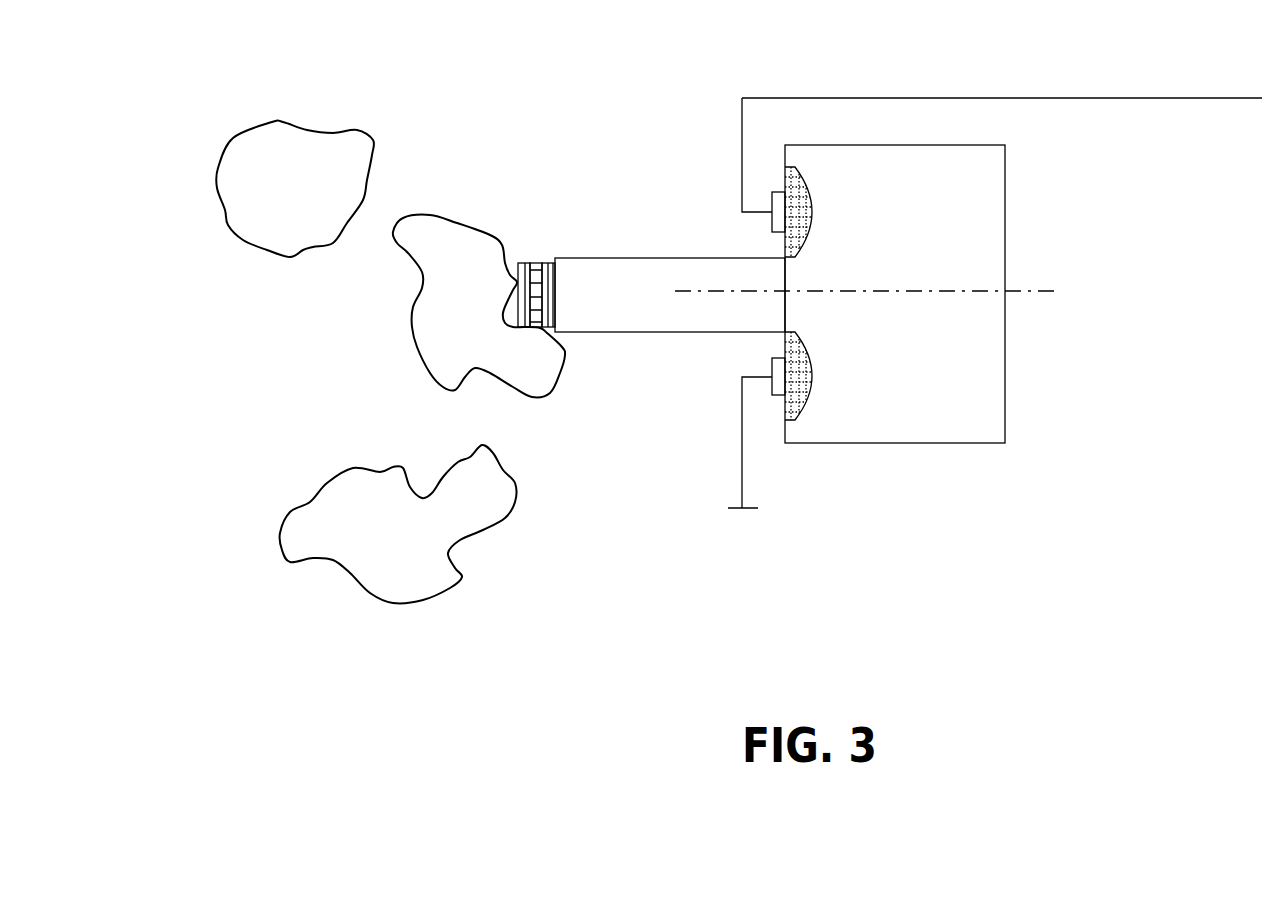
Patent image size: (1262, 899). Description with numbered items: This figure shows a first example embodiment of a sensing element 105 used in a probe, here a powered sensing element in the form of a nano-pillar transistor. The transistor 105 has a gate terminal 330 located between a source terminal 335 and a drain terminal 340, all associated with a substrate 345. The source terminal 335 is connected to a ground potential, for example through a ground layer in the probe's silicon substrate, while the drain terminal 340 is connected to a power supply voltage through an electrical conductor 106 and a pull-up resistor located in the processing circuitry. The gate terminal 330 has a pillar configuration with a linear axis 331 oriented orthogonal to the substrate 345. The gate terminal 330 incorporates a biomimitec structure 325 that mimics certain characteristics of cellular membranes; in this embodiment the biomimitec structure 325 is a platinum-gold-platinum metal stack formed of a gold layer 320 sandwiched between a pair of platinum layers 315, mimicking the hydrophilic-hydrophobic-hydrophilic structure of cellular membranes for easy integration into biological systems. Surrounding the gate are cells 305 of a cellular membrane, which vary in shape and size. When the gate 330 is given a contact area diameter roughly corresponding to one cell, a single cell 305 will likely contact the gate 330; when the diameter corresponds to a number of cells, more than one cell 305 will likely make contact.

The sensing element 105 is at (603, 101).
The electrical conductor 106 is at (1068, 98).
The cells 305 is at (390, 361).
The platinum layers 315 is at (520, 262).
The gold layer 320 is at (535, 262).
The biomimitec structure 325 is at (522, 214).
The gate terminal 330 is at (670, 295).
The linear axis 331 is at (792, 291).
The source terminal 335 is at (812, 388).
The drain terminal 340 is at (812, 207).
The substrate 345 is at (895, 294).